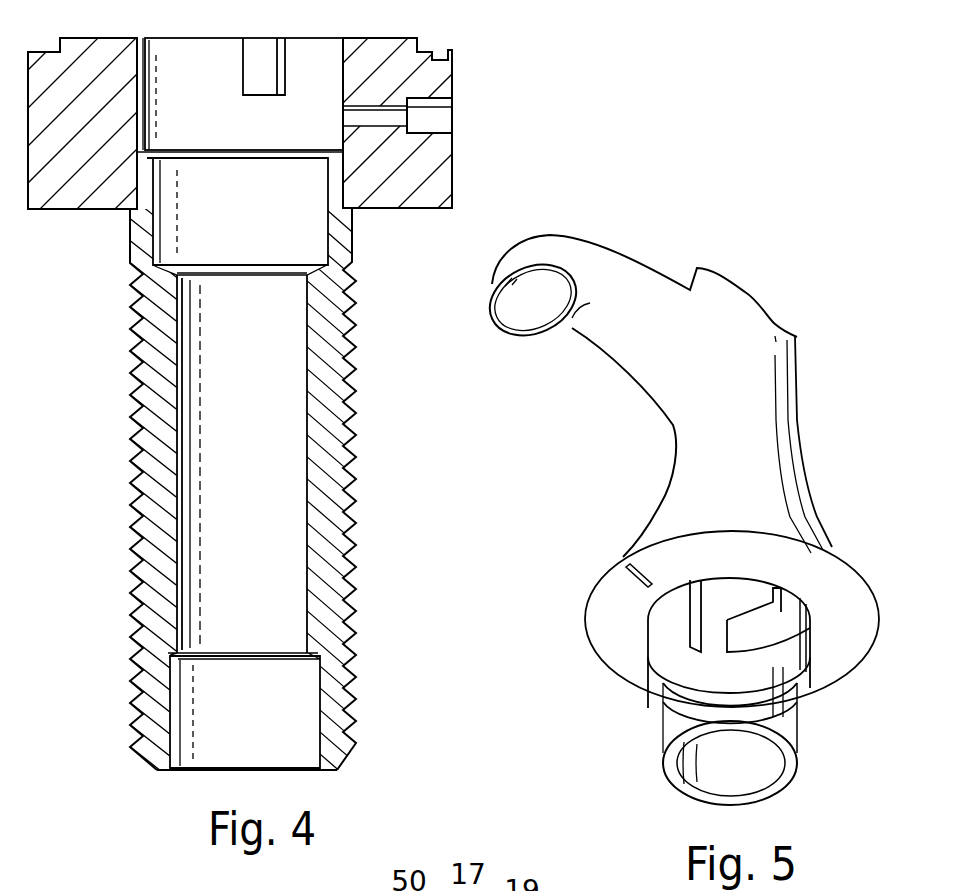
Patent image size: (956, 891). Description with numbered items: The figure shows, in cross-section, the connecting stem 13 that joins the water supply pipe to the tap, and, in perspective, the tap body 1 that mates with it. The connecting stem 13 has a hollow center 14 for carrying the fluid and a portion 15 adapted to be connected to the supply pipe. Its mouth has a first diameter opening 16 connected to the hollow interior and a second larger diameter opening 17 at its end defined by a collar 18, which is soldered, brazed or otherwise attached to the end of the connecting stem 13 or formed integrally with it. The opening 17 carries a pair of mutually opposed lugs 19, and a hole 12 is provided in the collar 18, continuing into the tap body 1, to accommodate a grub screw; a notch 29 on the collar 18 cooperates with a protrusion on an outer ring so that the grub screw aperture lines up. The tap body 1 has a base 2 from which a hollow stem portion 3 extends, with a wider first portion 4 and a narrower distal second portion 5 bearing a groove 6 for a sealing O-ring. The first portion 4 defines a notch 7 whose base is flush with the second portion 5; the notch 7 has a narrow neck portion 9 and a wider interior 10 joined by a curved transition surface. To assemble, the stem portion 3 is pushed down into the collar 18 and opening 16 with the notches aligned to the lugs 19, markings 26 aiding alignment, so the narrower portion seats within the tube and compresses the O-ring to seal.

In FIG. 5, the tap body 1 is at (620, 410).
In FIG. 5, the base 2 is at (832, 650).
In FIG. 5, the stem portion 3 is at (670, 627).
In FIG. 5, the first portion 4 is at (652, 662).
In FIG. 5, the second portion 5 is at (677, 720).
In FIG. 5, the groove 6 is at (790, 710).
In FIG. 5, the notch 7 is at (711, 582).
In FIG. 5, the neck portion 9 is at (712, 640).
In FIG. 5, the wider interior 10 is at (735, 595).
In FIG. 4, the hole 12 is at (378, 119).
In FIG. 4, the connecting stem 13 is at (378, 395).
In FIG. 4, the hollow center 14 is at (208, 548).
In FIG. 4, the portion 15 is at (203, 722).
In FIG. 4, the first diameter opening 16 is at (187, 225).
In FIG. 4, the second larger diameter opening 17 is at (307, 95).
In FIG. 4, the collar 18 is at (53, 187).
In FIG. 4, the lugs 19 is at (262, 63).
In FIG. 5, the markings 26 is at (623, 578).
In FIG. 4, the notch 29 is at (437, 53).